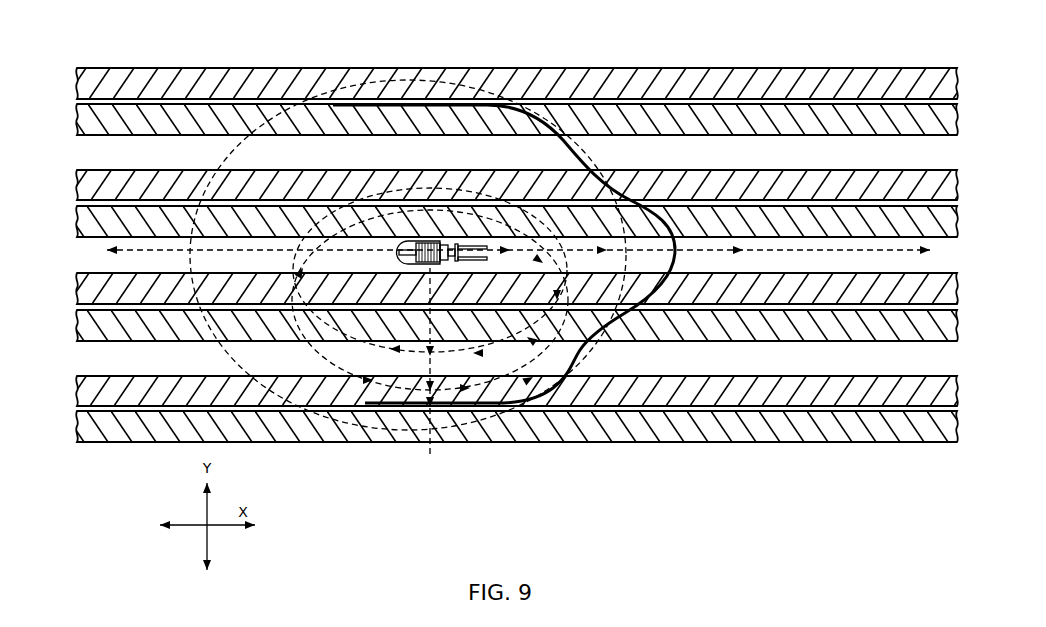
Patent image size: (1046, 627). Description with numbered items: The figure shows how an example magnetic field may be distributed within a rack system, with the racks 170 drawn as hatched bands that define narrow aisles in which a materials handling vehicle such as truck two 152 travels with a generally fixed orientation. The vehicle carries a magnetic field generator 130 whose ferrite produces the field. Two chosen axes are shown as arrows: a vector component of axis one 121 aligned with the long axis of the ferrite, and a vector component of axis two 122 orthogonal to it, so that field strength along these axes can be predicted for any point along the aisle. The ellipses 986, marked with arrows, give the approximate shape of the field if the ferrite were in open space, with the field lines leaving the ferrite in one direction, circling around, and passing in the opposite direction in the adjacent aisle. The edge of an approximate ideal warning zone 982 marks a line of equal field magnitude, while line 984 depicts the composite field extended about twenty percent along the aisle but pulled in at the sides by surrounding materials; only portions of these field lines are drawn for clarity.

The racks 170 is at (223, 87).
The magnetic field generator 130 is at (442, 236).
The truck two 152 is at (425, 243).
The axis one 121 is at (823, 248).
The axis two 122 is at (427, 447).
The edge of approximate ideal warning zone 982 is at (232, 362).
The composite field line 984 is at (365, 437).
The magnetic field ellipses 986 is at (553, 238).